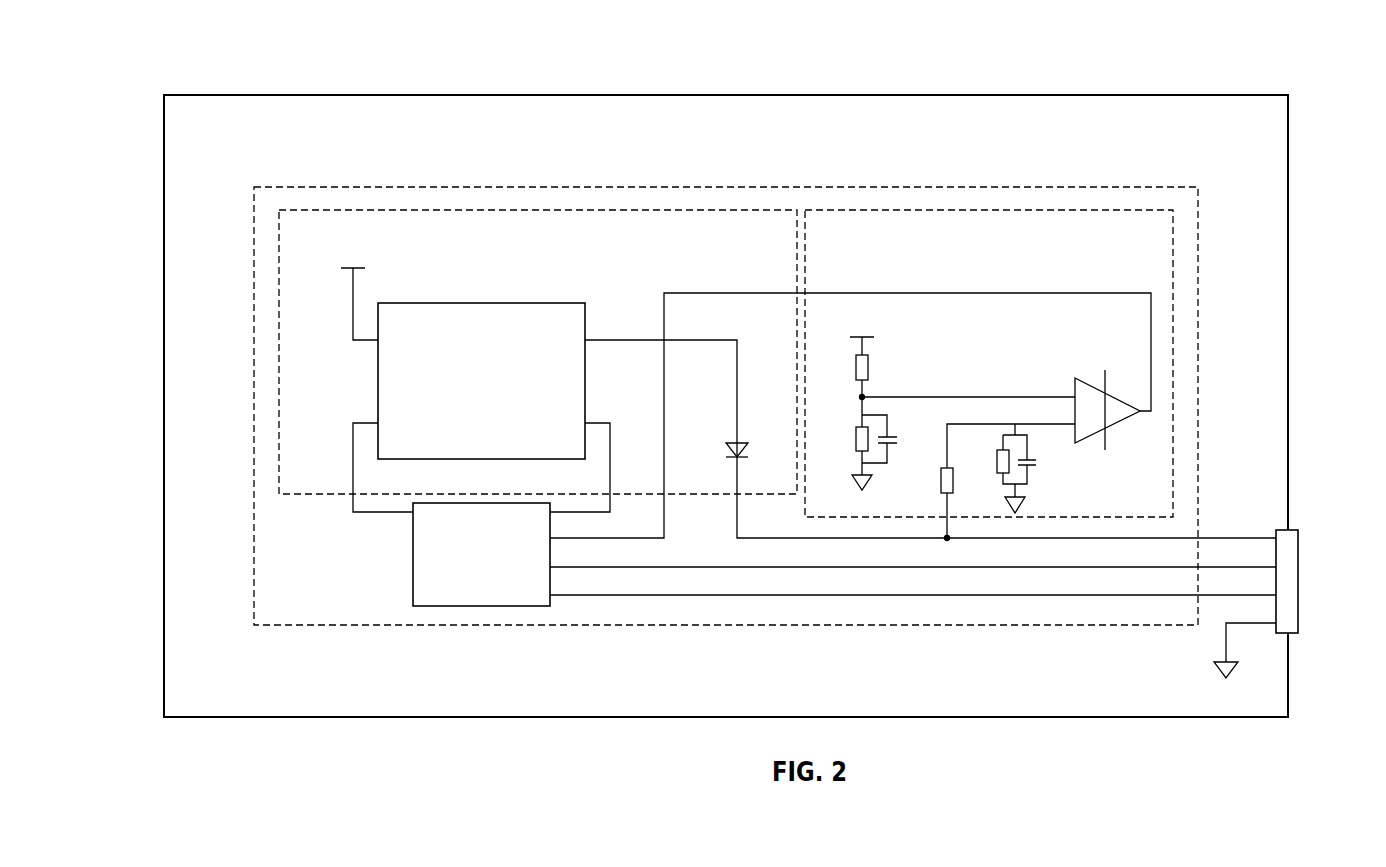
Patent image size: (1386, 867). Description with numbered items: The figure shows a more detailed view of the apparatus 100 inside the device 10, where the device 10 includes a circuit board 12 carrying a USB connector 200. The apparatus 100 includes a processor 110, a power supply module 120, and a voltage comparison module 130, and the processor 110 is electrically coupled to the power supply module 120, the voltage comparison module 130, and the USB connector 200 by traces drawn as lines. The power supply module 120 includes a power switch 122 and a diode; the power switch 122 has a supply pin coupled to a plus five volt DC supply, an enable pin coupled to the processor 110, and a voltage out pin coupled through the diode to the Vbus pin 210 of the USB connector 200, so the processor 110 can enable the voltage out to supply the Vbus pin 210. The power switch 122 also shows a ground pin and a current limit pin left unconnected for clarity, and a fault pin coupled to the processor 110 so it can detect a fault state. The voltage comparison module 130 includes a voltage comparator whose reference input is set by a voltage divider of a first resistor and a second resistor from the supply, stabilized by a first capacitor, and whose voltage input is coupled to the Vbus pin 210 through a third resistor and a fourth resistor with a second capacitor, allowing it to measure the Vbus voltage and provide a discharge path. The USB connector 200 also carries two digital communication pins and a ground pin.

The device 10 is at (193, 38).
The circuit board 12 is at (215, 95).
The apparatus 100 is at (318, 186).
The processor 110 is at (413, 552).
The power supply module 120 is at (538, 210).
The power switch 122 is at (480, 302).
The voltage comparison module 130 is at (993, 210).
The USB connector 200 is at (1304, 508).
The Vbus pin 210 is at (1272, 535).